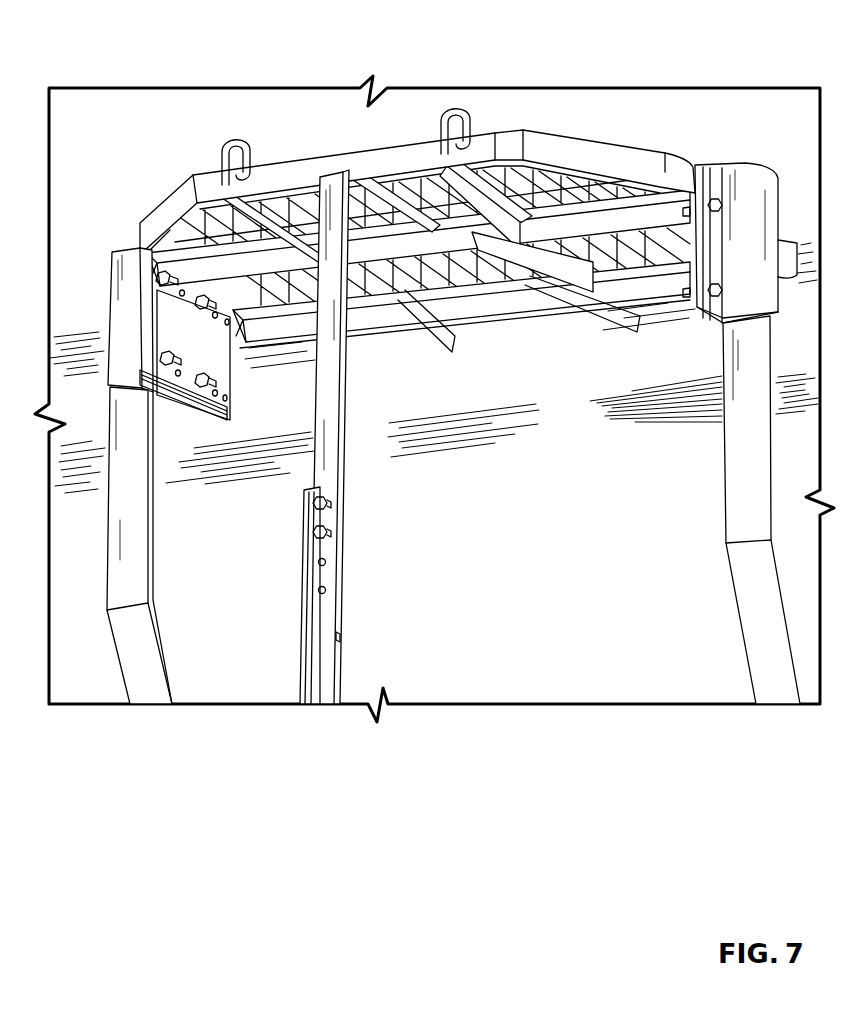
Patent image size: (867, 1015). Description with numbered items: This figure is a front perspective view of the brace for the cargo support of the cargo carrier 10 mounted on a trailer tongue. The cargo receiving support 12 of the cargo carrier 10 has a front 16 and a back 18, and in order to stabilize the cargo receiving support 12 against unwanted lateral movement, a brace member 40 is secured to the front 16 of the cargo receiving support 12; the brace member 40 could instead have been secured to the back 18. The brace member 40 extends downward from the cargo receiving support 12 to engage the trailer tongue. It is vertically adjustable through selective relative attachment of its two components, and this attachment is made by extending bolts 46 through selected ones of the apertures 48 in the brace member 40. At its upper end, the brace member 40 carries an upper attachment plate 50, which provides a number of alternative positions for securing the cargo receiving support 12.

The cargo carrier 10 is at (233, 60).
The cargo receiving support 12 is at (573, 148).
The front 16 is at (392, 155).
The back 18 is at (540, 313).
The brace member 40 is at (337, 463).
The bolts 46 is at (313, 503).
The apertures 48 is at (325, 562).
The upper attachment plate 50 is at (377, 202).